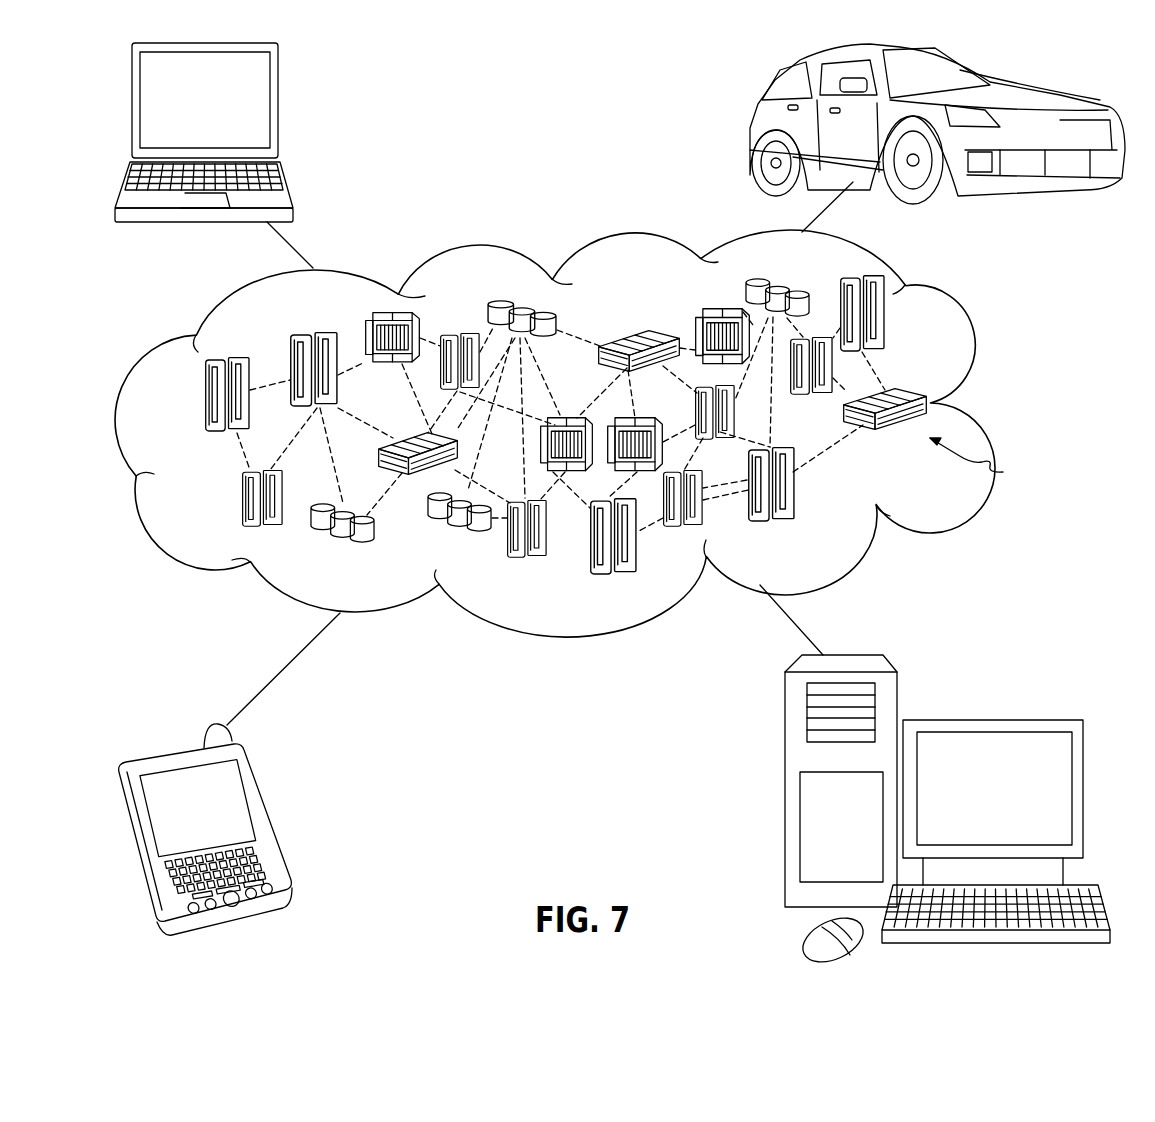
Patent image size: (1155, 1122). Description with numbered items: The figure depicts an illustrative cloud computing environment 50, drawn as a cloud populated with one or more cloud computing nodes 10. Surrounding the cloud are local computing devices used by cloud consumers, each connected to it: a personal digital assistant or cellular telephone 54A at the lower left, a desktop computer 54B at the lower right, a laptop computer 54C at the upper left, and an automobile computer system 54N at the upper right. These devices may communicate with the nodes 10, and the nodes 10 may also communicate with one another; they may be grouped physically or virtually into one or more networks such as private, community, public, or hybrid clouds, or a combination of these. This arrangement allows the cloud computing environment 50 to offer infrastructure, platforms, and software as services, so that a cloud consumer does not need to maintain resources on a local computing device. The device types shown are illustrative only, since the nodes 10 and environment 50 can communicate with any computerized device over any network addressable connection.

The cloud computing environment 50 is at (988, 407).
The cloud computing node 10 is at (984, 461).
The personal digital assistant or cellular telephone 54A is at (263, 822).
The desktop computer 54B is at (990, 718).
The laptop computer 54C is at (280, 108).
The automobile computer system 54N is at (752, 127).